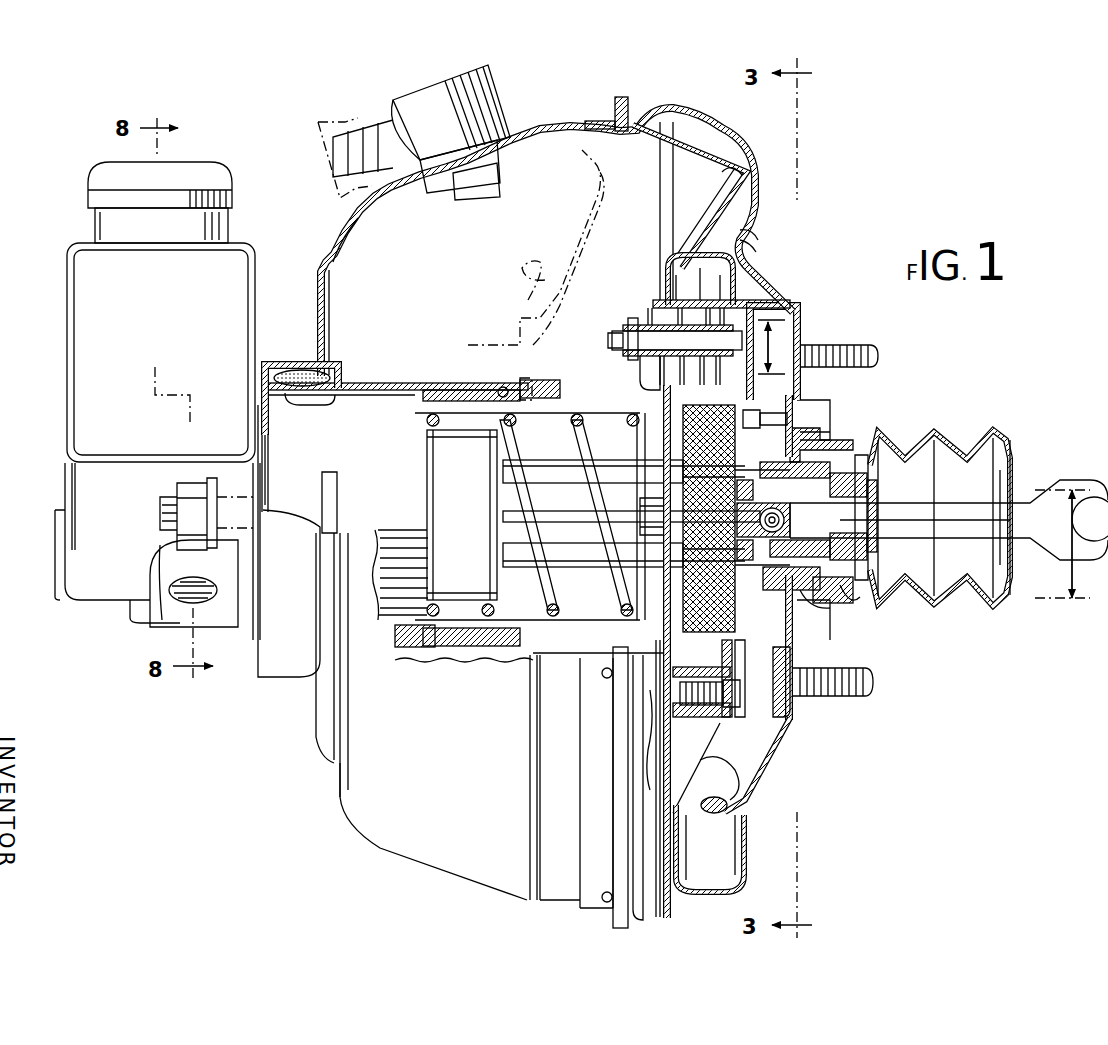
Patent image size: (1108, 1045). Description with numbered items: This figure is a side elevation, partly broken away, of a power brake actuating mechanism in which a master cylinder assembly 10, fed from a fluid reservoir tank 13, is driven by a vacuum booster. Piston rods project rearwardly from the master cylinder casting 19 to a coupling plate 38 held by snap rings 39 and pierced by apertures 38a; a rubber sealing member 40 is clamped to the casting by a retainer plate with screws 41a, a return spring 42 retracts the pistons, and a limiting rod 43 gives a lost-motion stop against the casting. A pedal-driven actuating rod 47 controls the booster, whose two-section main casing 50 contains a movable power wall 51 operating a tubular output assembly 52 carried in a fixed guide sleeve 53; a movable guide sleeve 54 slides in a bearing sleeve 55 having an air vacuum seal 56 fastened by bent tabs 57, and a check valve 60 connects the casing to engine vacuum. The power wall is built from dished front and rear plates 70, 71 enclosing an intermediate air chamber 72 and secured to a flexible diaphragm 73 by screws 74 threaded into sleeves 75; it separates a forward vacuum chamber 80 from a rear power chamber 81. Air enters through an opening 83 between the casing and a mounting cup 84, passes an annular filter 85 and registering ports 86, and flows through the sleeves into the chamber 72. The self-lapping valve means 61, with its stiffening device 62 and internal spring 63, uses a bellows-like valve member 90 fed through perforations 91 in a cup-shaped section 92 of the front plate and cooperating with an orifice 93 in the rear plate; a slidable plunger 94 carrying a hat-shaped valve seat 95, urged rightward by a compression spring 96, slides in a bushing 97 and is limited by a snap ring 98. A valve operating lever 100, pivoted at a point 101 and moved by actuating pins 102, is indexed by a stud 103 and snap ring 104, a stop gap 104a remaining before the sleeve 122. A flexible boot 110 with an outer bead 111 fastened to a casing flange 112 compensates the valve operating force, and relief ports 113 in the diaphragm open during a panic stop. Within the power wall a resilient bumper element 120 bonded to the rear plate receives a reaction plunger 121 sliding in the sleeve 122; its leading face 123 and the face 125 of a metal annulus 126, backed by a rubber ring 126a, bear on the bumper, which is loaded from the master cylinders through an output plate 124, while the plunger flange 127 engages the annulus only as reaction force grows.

The master cylinder assembly 10 is at (369, 384).
The fluid reservoir tank 13 is at (68, 325).
The master cylinder casting 19 is at (393, 627).
The coupling plate 38 is at (614, 430).
The apertures 38a is at (624, 471).
The snap rings 39 is at (663, 410).
The rubber sealing member 40 is at (640, 560).
The screws 41a is at (505, 515).
The return spring 42 is at (522, 650).
The limiting rod 43 is at (548, 472).
The actuating rod 47 is at (955, 515).
The main casing 50 is at (735, 120).
The movable power wall 51 is at (700, 225).
The tubular output assembly 52 is at (578, 655).
The guide sleeve 53 is at (398, 384).
The movable guide sleeve 54 is at (565, 412).
The bearing sleeve 55 is at (445, 388).
The air vacuum seal 56 is at (432, 390).
The bent tabs 57 is at (512, 382).
The check valve 60 is at (505, 104).
The valve means 61 is at (652, 308).
The stiffening device 62 is at (742, 303).
The internal spring 63 is at (722, 282).
The front power wall plate 70 is at (712, 812).
The rear power wall plate 71 is at (745, 790).
The intermediate air chamber 72 is at (700, 732).
The flexible annular diaphragm 73 is at (700, 150).
The screws 74 is at (795, 716).
The sleeves 75 is at (665, 760).
The vacuum chamber 80 is at (502, 786).
The power chamber 81 is at (755, 557).
The opening 83 is at (320, 698).
The mounting cup 84 is at (258, 688).
The annular filter 85 is at (306, 372).
The registering ports 86 is at (300, 372).
The tubular bellows-like valve member 90 is at (736, 265).
The perforations 91 is at (678, 305).
The cup-shaped section 92 is at (650, 305).
The orifice 93 is at (800, 405).
The slidable plunger 94 is at (642, 362).
The valve seat 95 is at (790, 315).
The compression spring 96 is at (655, 322).
The bushing 97 is at (630, 330).
The snap ring 98 is at (615, 345).
The valve operating lever 100 is at (790, 340).
The pivot point 101 is at (798, 625).
The actuating pins 102 is at (760, 590).
The stud 103 is at (800, 425).
The snap ring 104 is at (890, 458).
The stop gap 104a is at (930, 600).
The flexible boot 110 is at (998, 605).
The bead 111 is at (822, 610).
The flange 112 is at (852, 604).
The relief ports 113 is at (748, 245).
The resilient bumper element 120 is at (775, 675).
The reaction plunger 121 is at (862, 520).
The sleeve 122 is at (875, 445).
The leading face 123 is at (745, 525).
The output plate 124 is at (640, 512).
The face 125 is at (712, 518).
The metal annulus 126 is at (745, 575).
The rubber ring 126a is at (805, 438).
The plunger flange 127 is at (786, 520).